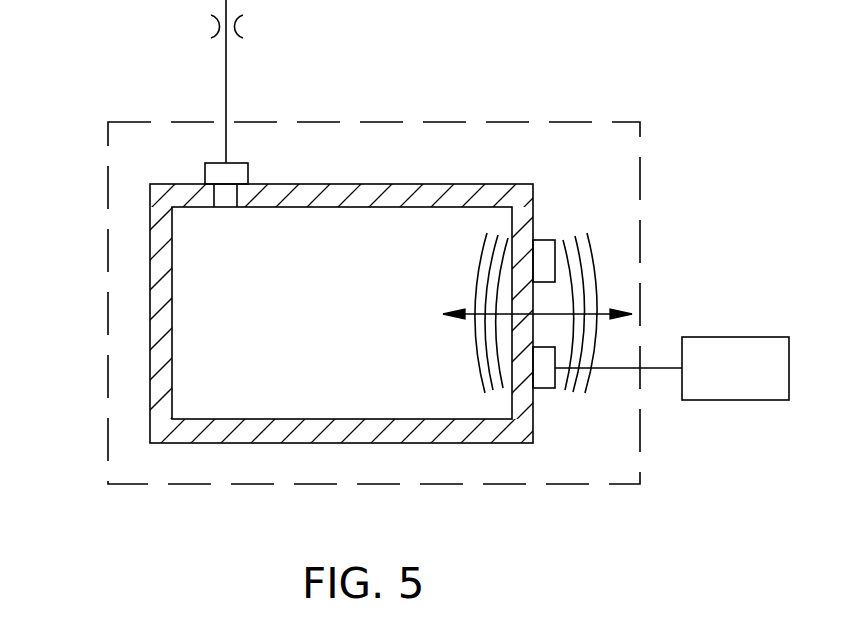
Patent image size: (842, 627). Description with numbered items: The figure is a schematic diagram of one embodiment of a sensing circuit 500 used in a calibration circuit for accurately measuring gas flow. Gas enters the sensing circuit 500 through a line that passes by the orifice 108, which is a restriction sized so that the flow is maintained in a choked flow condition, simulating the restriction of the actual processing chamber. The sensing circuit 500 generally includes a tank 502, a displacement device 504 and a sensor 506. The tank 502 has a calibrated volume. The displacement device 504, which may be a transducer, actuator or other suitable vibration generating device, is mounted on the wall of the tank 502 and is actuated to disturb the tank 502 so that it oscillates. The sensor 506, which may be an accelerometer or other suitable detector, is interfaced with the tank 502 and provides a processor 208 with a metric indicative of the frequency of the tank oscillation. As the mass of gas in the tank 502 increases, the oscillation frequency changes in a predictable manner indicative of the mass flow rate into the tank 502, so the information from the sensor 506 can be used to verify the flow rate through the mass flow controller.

The orifice 108 is at (195, 30).
The sensing circuit 500 is at (498, 122).
The tank 502 is at (373, 186).
The displacement device 504 is at (587, 247).
The sensor 506 is at (557, 378).
The processor 208 is at (762, 386).